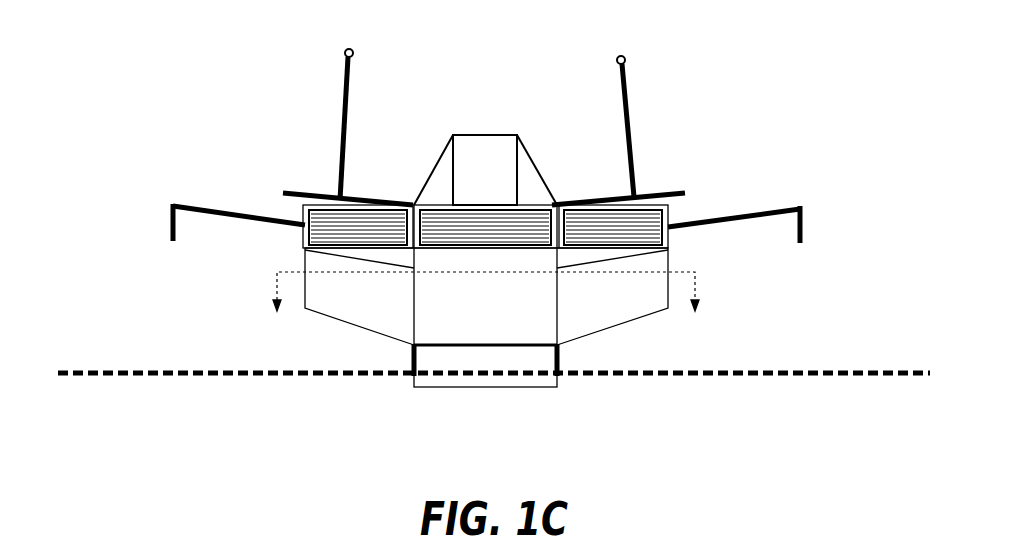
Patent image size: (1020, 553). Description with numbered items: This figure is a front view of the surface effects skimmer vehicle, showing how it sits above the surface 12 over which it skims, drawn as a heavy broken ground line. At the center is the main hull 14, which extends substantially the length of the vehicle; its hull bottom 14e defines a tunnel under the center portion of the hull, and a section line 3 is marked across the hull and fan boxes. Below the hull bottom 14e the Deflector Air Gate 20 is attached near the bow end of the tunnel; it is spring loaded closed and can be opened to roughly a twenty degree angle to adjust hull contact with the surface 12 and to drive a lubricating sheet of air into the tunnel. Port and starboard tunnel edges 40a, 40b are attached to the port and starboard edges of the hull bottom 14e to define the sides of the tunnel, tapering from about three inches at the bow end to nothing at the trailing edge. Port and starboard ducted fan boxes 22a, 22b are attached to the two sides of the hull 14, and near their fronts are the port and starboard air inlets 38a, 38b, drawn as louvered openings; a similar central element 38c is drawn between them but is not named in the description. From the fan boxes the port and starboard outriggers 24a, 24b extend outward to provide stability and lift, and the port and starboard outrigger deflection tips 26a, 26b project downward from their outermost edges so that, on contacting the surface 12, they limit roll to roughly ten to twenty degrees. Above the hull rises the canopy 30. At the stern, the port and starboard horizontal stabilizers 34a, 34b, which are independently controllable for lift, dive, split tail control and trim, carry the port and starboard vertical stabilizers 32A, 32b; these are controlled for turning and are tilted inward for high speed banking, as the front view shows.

The surface 12 is at (315, 372).
The section line 3- 3 is at (486, 309).
The main hull 14 is at (485, 296).
The hull bottom 14e is at (468, 340).
The Deflector Air Gate 20 is at (523, 357).
The starboard ducted fan box 22b is at (359, 296).
The port ducted fan box 22a is at (612, 296).
The starboard air inlet 38b is at (330, 220).
The center grille 38c is at (445, 227).
The port air inlet 38a is at (617, 227).
The canopy 30 is at (477, 162).
The starboard horizontal stabilizer 34b is at (372, 195).
The port horizontal stabilizer 34a is at (602, 200).
The starboard vertical stabilizer 32b is at (342, 123).
The port vertical stabilizer 32A is at (635, 137).
The starboard outrigger 24b is at (243, 212).
The starboard outrigger deflection tip 26b is at (170, 218).
The port outrigger 24a is at (732, 217).
The port outrigger deflection tip 26a is at (805, 230).
The starboard tunnel edge 40b is at (410, 347).
The port tunnel edge 40a is at (560, 347).